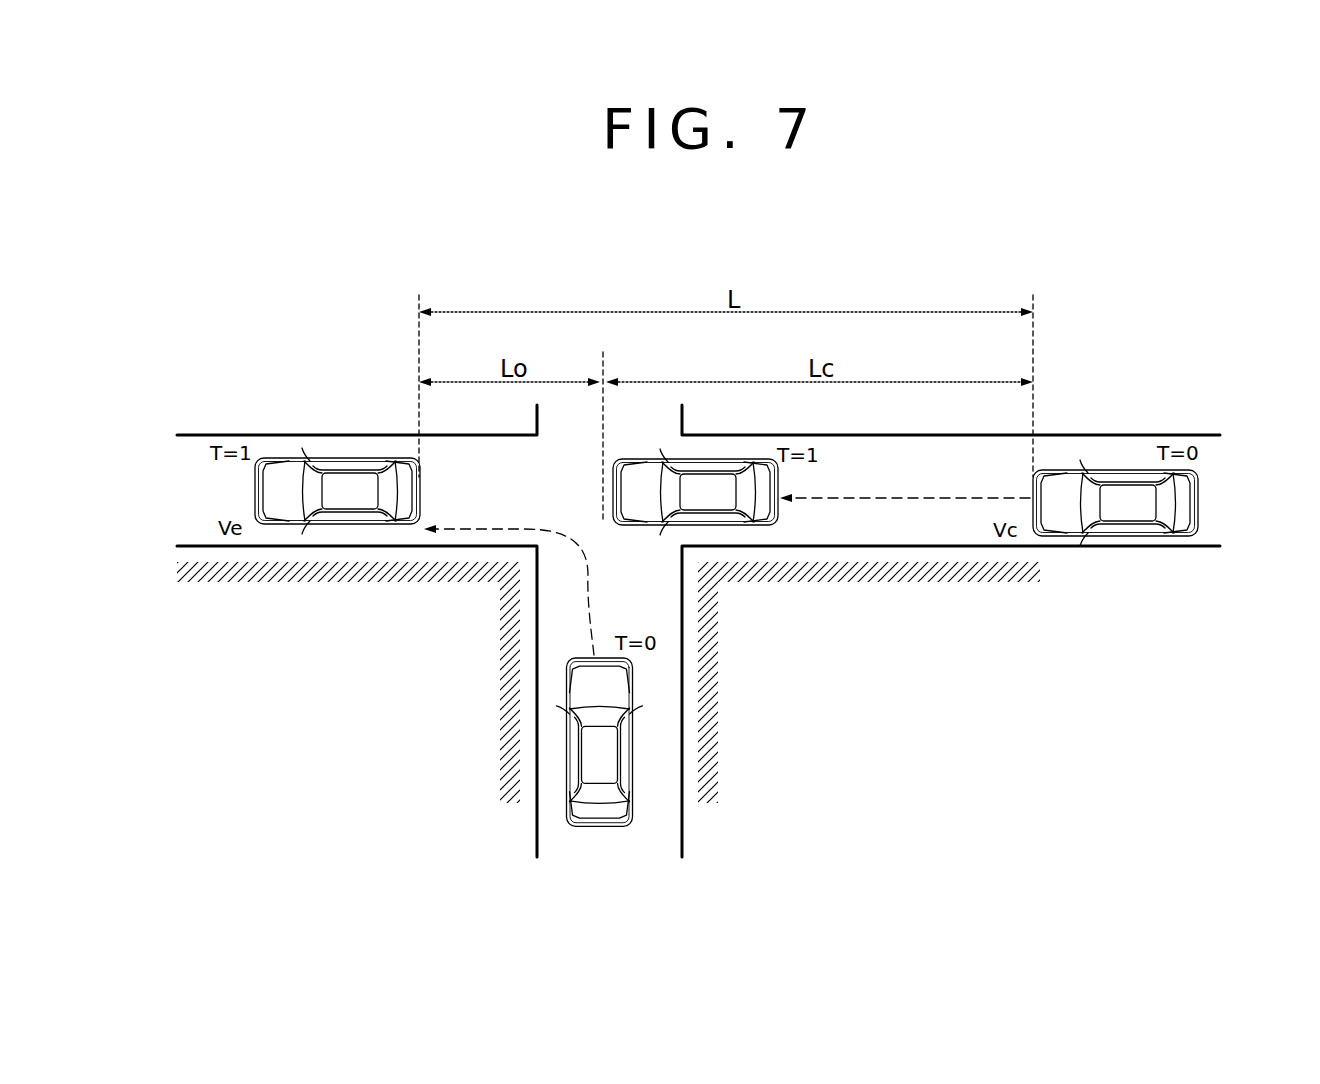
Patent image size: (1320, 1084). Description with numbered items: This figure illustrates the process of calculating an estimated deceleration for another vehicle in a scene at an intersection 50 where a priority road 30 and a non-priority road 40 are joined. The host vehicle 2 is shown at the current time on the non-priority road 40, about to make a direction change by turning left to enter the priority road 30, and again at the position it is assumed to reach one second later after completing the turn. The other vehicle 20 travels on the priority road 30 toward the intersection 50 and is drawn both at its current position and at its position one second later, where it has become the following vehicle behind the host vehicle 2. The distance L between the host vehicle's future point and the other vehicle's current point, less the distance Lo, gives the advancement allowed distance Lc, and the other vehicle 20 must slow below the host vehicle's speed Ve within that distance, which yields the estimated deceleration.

The host vehicle 2 is at (593, 828).
The other vehicle 20 is at (1115, 537).
The priority road 30 is at (1086, 452).
The non-priority road 40 is at (668, 830).
The intersection 50 is at (530, 552).